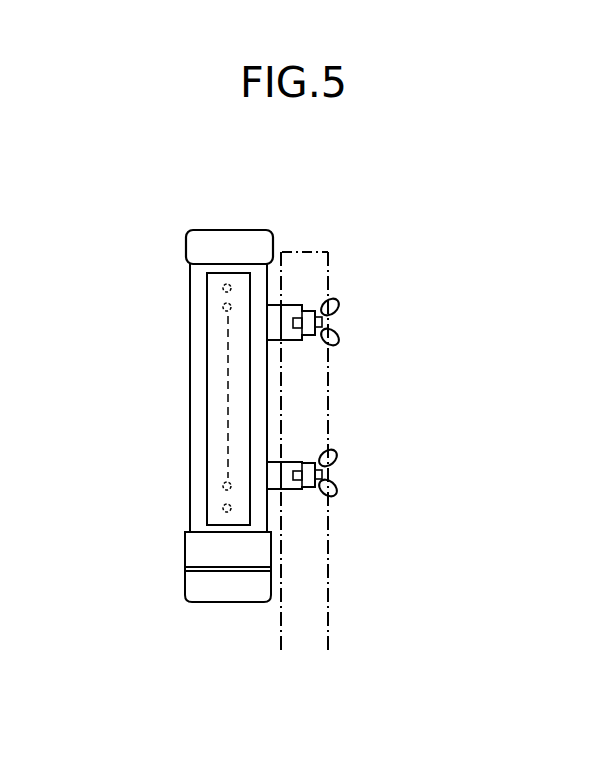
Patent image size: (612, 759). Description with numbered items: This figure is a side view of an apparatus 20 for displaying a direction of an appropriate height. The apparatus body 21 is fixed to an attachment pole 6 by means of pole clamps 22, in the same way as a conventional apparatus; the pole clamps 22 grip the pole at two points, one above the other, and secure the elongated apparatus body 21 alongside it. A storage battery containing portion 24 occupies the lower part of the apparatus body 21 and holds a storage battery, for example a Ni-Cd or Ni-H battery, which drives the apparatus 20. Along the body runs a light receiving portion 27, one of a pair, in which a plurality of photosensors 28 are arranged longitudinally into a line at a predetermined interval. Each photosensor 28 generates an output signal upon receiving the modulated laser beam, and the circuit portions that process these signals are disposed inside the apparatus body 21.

The attachment pole 6 is at (328, 518).
The apparatus 20 is at (272, 225).
The apparatus body 21 is at (206, 318).
The pole clamps 22 is at (340, 320).
The storage battery containing portion 24 is at (222, 592).
The light receiving portion 27 is at (240, 391).
The photosensors 28 is at (232, 306).